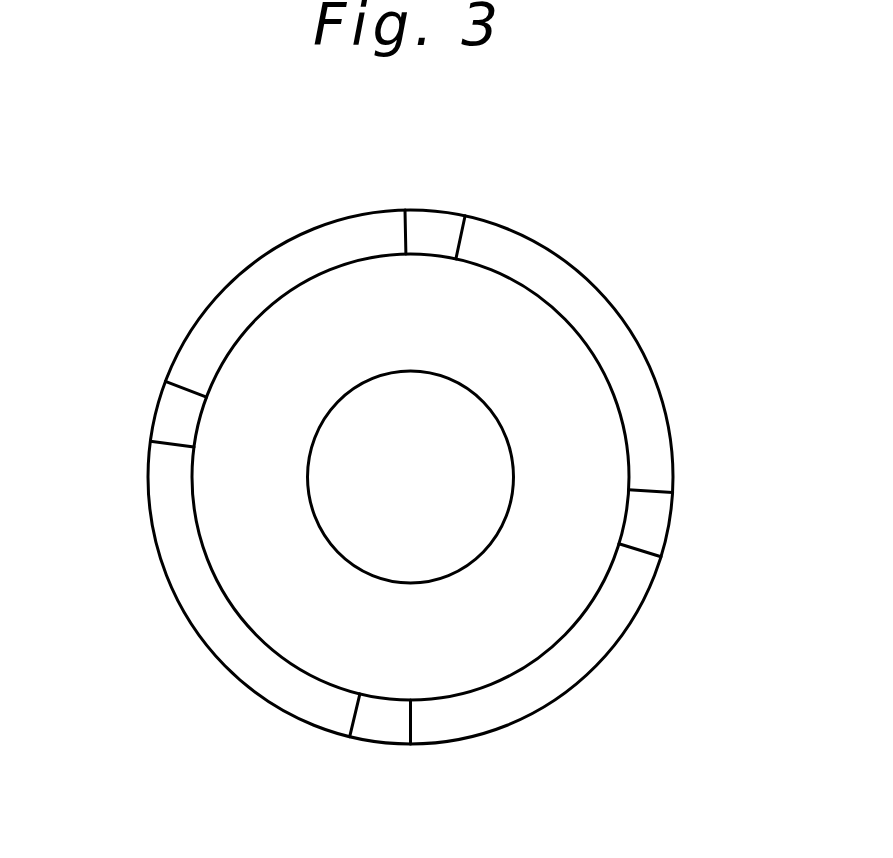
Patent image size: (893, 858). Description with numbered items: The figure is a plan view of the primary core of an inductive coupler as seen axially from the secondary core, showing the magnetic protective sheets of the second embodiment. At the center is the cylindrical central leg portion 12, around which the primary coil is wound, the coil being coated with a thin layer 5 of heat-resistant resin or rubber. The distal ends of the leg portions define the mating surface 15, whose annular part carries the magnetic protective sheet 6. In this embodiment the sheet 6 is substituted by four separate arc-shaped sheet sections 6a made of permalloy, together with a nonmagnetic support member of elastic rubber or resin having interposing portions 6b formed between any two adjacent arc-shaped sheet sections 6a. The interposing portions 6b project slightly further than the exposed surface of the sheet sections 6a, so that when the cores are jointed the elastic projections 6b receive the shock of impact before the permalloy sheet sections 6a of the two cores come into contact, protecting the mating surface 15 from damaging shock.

The thin layer 5 is at (582, 413).
The magnetic protective sheet 6 is at (465, 425).
The arc-shaped sheet sections 6a is at (310, 245).
The interposing portions 6b is at (433, 235).
The central leg portion 12 is at (492, 543).
The mating surface 15 is at (643, 435).